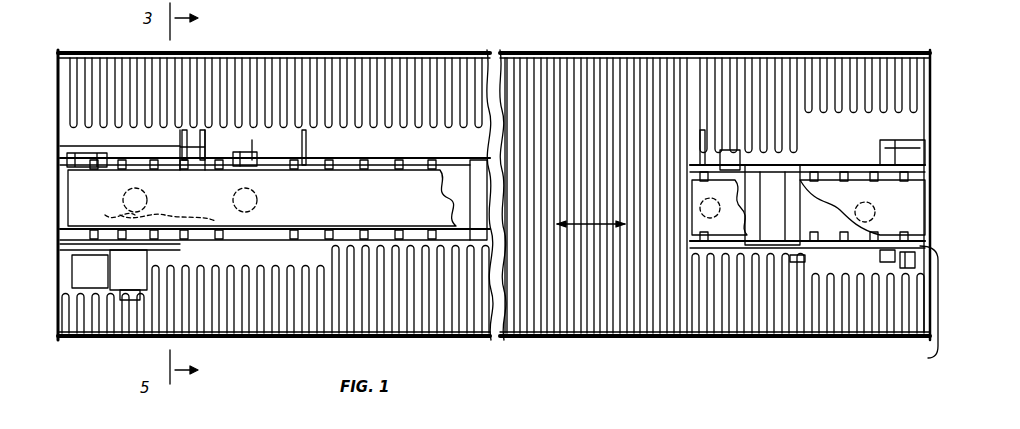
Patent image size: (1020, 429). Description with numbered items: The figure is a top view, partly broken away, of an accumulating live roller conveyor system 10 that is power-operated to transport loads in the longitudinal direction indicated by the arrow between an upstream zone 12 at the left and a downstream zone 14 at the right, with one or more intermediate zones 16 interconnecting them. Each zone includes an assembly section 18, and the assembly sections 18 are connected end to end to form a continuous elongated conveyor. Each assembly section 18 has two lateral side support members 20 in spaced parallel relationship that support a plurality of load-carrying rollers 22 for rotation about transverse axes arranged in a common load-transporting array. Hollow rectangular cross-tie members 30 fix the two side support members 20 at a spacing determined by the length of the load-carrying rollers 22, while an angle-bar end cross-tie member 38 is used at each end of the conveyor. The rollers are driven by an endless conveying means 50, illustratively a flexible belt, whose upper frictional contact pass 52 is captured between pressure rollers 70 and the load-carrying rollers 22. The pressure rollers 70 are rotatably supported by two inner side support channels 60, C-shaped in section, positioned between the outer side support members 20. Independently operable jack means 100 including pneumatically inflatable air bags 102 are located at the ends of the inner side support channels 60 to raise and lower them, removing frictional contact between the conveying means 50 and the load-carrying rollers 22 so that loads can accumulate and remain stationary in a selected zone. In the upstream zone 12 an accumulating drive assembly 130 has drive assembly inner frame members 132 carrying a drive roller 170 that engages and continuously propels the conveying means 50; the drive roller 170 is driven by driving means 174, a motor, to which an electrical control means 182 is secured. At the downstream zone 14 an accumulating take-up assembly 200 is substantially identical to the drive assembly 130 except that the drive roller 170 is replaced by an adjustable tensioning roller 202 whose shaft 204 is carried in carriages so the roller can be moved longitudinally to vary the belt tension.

The live roller conveyor system 10 is at (362, 50).
The upstream zone 12 is at (57, 35).
The downstream zone 14 is at (880, 54).
The intermediate zone 16 is at (510, 52).
The assembly section 18 is at (190, 52).
The lateral side support member 20 is at (578, 56).
The load-carrying roller 22 is at (655, 68).
The cross-tie member 30 is at (200, 147).
The end cross-tie member 38 is at (57, 290).
The endless conveying means 50 is at (420, 170).
The upper frictional contact pass 52 is at (384, 203).
The inner side support channel 60 is at (340, 160).
The pressure roller 70 is at (383, 165).
The jack means 100 is at (135, 163).
The air bag 102 is at (165, 215).
The accumulating drive assembly 130 is at (95, 298).
The drive assembly inner frame member 132 is at (72, 148).
The drive roller 170 is at (80, 166).
The driving means 174 is at (125, 290).
The electrical control means 182 is at (137, 300).
The accumulating take-up assembly 200 is at (907, 277).
The tensioning roller 202 is at (872, 270).
The tension roller shaft 204 is at (917, 311).